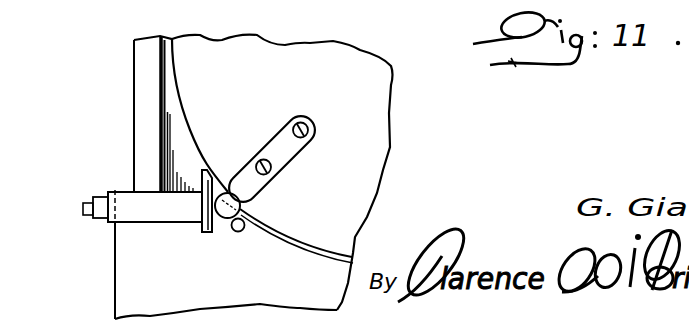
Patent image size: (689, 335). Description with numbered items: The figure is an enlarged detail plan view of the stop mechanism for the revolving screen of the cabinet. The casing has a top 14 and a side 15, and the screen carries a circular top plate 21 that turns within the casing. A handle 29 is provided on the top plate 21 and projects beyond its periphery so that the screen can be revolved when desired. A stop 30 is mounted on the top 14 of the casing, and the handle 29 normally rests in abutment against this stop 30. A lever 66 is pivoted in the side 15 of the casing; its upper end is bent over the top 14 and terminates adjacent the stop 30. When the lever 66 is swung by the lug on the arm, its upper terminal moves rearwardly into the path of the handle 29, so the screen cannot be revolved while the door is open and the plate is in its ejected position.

The top 14 is at (226, 270).
The side 15 is at (150, 108).
The circular top plate 21 is at (263, 172).
The handle 29 is at (270, 144).
The stop 30 is at (236, 236).
The lever 66 is at (188, 215).